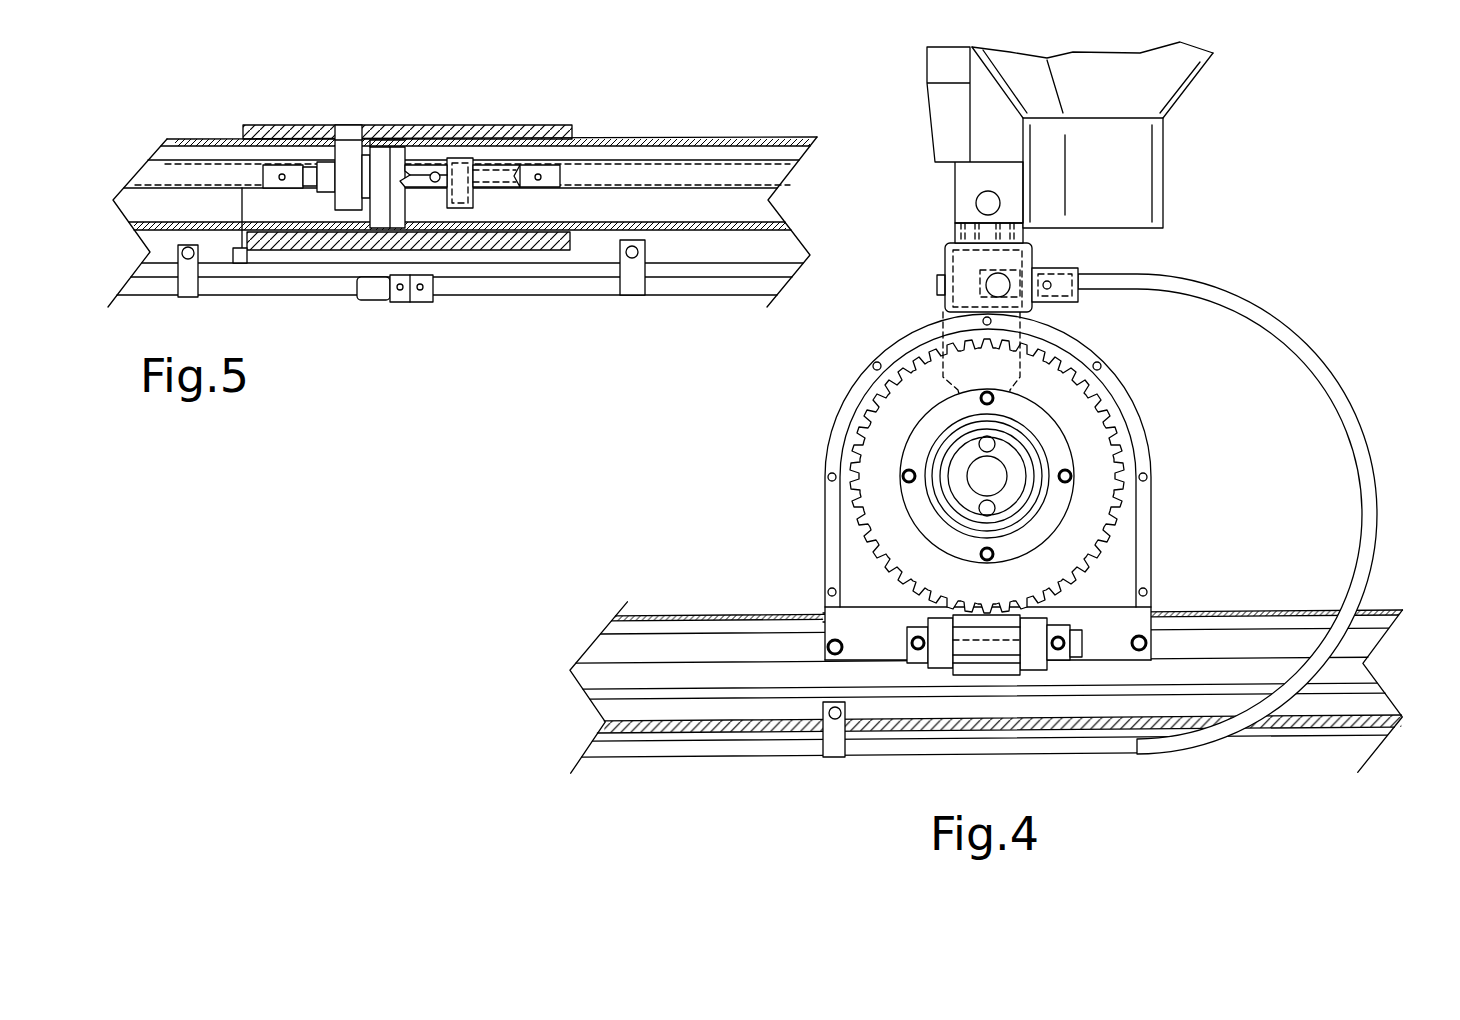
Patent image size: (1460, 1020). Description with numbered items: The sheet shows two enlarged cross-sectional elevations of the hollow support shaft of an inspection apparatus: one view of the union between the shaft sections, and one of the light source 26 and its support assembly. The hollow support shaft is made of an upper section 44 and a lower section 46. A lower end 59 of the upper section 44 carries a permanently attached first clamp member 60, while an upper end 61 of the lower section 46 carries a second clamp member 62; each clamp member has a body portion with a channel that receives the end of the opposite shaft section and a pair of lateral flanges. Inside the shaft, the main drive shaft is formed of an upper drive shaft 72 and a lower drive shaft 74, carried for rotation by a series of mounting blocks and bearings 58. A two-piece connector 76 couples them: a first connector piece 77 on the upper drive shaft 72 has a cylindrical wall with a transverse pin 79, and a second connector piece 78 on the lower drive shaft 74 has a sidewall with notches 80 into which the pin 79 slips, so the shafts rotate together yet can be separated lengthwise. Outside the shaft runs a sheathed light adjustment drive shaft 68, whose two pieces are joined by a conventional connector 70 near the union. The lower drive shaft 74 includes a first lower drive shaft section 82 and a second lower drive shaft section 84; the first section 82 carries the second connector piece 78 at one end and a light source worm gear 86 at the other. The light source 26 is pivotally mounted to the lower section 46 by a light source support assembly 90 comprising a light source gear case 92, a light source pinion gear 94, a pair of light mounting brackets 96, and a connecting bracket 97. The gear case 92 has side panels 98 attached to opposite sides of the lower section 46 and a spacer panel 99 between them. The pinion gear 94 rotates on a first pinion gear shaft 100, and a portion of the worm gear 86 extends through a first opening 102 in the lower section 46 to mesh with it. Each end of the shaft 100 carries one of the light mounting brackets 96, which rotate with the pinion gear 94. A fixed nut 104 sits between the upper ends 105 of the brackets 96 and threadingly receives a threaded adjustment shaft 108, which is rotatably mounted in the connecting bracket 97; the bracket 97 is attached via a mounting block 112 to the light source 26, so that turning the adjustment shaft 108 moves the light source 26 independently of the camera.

In FIG. 4, the light source 26 is at (1190, 136).
In FIG. 5, the upper section 44 is at (190, 137).
In FIG. 5, the lower section 46 is at (598, 143).
In FIG. 4, the lower section 46 is at (1283, 612).
In FIG. 5, the mounting blocks and bearings 58 is at (352, 130).
In FIG. 5, the lower end 59 is at (213, 137).
In FIG. 5, the first clamp member 60 is at (570, 127).
In FIG. 5, the upper end 61 is at (667, 143).
In FIG. 5, the second clamp member 62 is at (568, 245).
In FIG. 5, the light adjustment drive shaft 68 is at (255, 296).
In FIG. 4, the light adjustment drive shaft 68 is at (1352, 393).
In FIG. 5, the connector 70 is at (411, 315).
In FIG. 5, the upper drive shaft 72 is at (227, 173).
In FIG. 5, the lower drive shaft 74 is at (708, 167).
In FIG. 5, the two-piece connector 76 is at (435, 208).
In FIG. 5, the first connector piece 77 is at (382, 173).
In FIG. 5, the second connector piece 78 is at (497, 173).
In FIG. 5, the transverse pin 79 is at (433, 172).
In FIG. 5, the notches 80 is at (400, 178).
In FIG. 5, the first lower drive shaft section 82 is at (780, 167).
In FIG. 4, the first lower drive shaft section 82 is at (725, 647).
In FIG. 4, the second lower drive shaft section 84 is at (1183, 638).
In FIG. 4, the light source worm gear 86 is at (945, 680).
In FIG. 4, the light source support assembly 90 is at (785, 494).
In FIG. 4, the light source gear case 92 is at (1165, 452).
In FIG. 4, the light source pinion gear 94 is at (880, 390).
In FIG. 4, the light mounting brackets 96 is at (1030, 400).
In FIG. 4, the connecting bracket 97 is at (1032, 258).
In FIG. 4, the side panels 98 is at (857, 580).
In FIG. 4, the spacer panel 99 is at (836, 418).
In FIG. 4, the first pinion gear shaft 100 is at (1007, 482).
In FIG. 4, the first opening 102 is at (1047, 612).
In FIG. 4, the fixed nut 104 is at (1005, 292).
In FIG. 4, the upper ends 105 is at (978, 308).
In FIG. 4, the threaded adjustment shaft 108 is at (963, 275).
In FIG. 4, the mounting block 112 is at (953, 233).